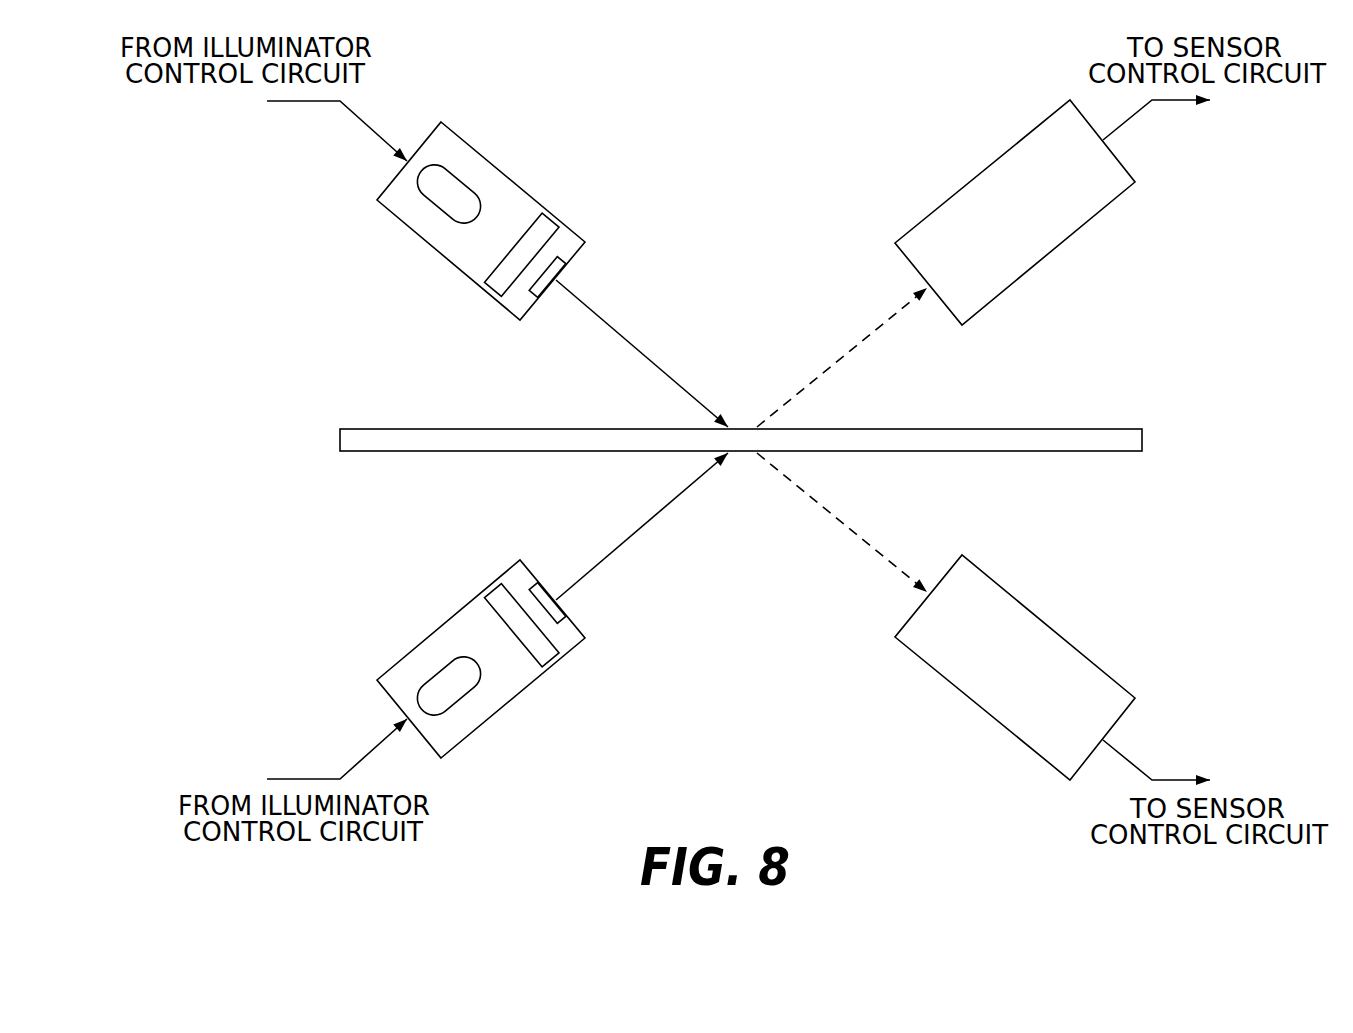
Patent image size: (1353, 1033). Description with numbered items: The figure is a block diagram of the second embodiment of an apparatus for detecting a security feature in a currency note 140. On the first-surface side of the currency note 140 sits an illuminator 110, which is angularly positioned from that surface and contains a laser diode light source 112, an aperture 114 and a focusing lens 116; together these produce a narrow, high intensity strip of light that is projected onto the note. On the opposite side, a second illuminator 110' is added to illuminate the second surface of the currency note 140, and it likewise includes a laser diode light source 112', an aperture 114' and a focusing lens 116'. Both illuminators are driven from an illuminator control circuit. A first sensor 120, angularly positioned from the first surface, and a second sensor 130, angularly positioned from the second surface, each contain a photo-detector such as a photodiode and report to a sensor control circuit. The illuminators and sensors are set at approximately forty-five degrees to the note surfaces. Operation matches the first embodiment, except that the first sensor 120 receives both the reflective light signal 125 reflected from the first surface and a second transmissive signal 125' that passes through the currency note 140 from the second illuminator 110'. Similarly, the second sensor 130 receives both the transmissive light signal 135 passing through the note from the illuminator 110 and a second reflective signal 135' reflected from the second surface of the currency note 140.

The illuminator 110 is at (486, 214).
The light source 112 is at (410, 201).
The aperture 114 is at (562, 246).
The focusing lens 116 is at (498, 294).
The second illuminator 110' is at (493, 662).
The light source 112' is at (469, 719).
The aperture 114' is at (555, 641).
The focusing lens 116' is at (509, 580).
The first sensor 120 is at (1025, 137).
The reflective light signal 125 is at (848, 357).
The second transmissive signal 125' is at (842, 357).
The second sensor 130 is at (1035, 753).
The transmissive light signal 135 is at (852, 522).
The second reflective signal 135' is at (852, 522).
The currency note 140 is at (414, 453).